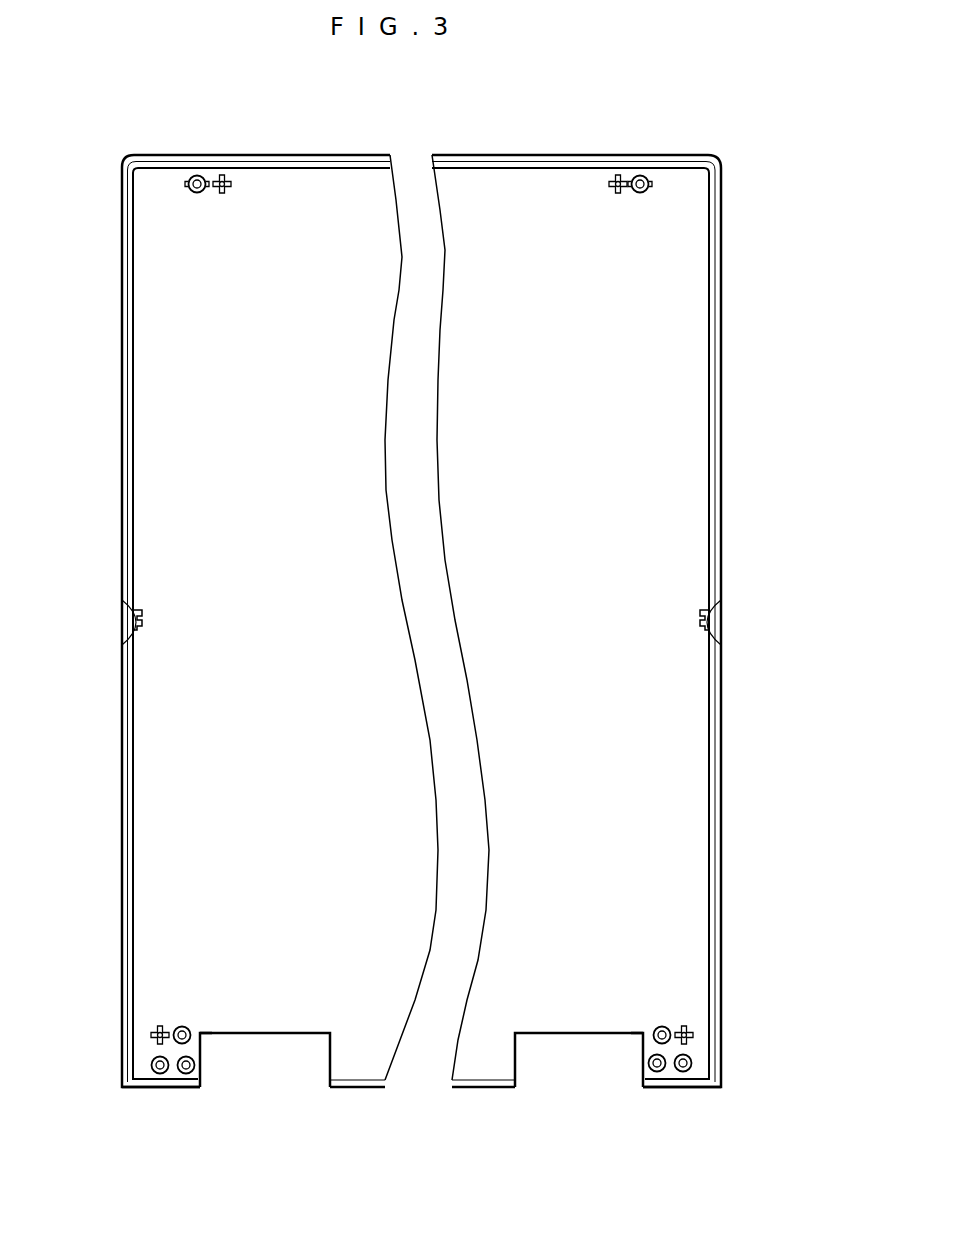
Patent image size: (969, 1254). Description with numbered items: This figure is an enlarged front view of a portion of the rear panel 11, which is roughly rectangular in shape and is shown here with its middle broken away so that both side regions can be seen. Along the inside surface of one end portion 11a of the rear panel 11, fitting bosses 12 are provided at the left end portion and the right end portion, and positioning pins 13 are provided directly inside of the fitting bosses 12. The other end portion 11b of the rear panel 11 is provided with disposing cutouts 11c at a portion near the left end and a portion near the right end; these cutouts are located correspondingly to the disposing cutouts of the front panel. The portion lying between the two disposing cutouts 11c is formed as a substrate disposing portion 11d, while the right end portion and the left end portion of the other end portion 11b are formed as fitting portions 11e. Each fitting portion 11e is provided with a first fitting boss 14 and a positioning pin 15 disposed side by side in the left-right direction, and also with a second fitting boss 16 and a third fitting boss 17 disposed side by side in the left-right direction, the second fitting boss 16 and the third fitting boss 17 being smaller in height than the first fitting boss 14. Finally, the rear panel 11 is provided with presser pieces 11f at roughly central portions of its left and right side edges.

The rear panel 11 is at (690, 132).
The one end portion 11a is at (305, 180).
The other end portion 11b is at (363, 1068).
The disposing cutout 11c is at (330, 1055).
The substrate disposing portion 11d is at (482, 1072).
The fitting portion 11e is at (141, 1070).
The presser piece 11f is at (122, 641).
The fitting boss 12 is at (197, 175).
The positioning pin 13 is at (224, 178).
The first fitting boss 14 is at (200, 1040).
The positioning pin 15 is at (150, 1035).
The second fitting boss 16 is at (192, 1078).
The third fitting boss 17 is at (150, 1063).